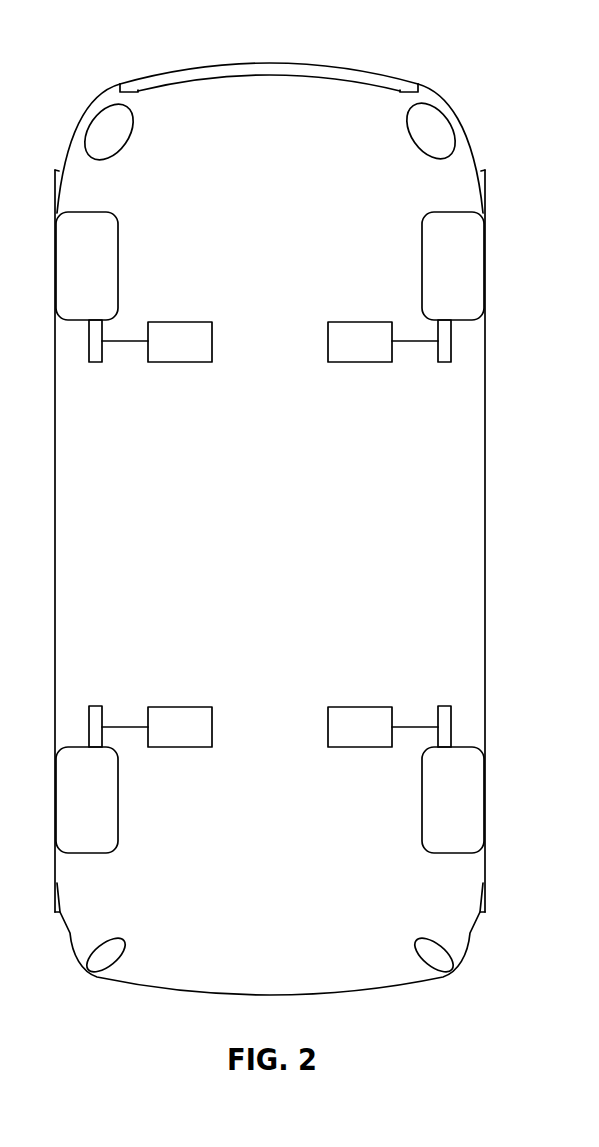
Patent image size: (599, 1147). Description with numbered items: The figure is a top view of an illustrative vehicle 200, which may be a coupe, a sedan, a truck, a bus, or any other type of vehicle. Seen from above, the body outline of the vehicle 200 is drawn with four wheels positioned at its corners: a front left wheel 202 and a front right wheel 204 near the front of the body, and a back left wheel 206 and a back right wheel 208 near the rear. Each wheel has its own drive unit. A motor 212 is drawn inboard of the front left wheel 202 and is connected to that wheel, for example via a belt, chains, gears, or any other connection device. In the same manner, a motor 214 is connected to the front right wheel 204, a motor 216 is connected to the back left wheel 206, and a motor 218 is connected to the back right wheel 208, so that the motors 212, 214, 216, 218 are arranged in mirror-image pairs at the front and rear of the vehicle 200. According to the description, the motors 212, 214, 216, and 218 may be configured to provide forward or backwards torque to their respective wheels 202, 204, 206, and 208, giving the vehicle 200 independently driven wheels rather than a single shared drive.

The vehicle 200 is at (293, 44).
The front left wheel 202 is at (85, 212).
The front right wheel 204 is at (455, 212).
The back left wheel 206 is at (100, 855).
The back right wheel 208 is at (440, 855).
The motor 212 is at (168, 362).
The motor 214 is at (372, 362).
The motor 216 is at (168, 706).
The motor 218 is at (372, 706).